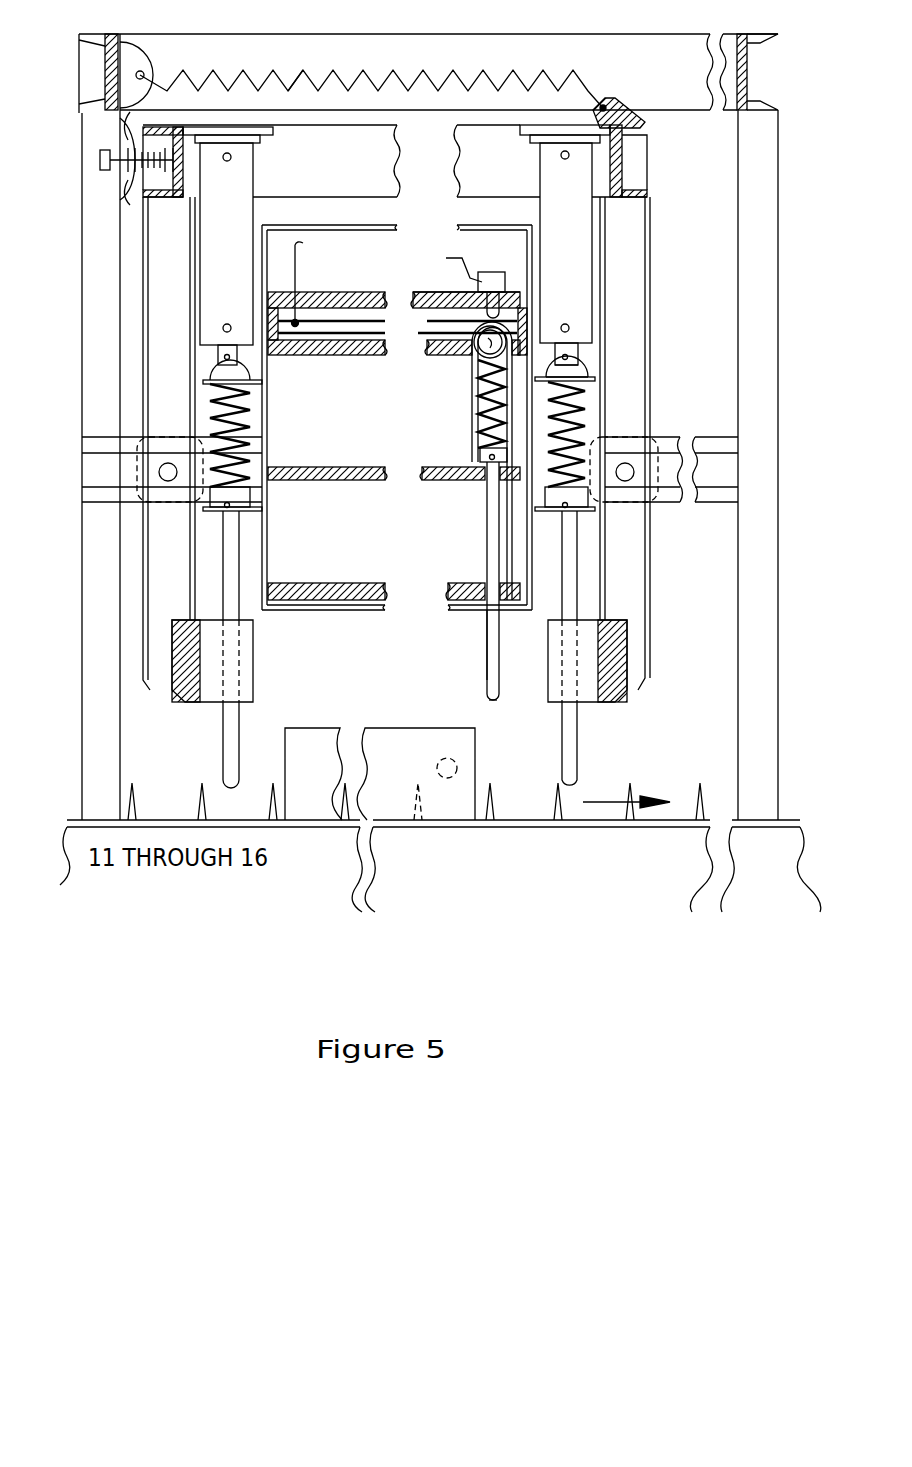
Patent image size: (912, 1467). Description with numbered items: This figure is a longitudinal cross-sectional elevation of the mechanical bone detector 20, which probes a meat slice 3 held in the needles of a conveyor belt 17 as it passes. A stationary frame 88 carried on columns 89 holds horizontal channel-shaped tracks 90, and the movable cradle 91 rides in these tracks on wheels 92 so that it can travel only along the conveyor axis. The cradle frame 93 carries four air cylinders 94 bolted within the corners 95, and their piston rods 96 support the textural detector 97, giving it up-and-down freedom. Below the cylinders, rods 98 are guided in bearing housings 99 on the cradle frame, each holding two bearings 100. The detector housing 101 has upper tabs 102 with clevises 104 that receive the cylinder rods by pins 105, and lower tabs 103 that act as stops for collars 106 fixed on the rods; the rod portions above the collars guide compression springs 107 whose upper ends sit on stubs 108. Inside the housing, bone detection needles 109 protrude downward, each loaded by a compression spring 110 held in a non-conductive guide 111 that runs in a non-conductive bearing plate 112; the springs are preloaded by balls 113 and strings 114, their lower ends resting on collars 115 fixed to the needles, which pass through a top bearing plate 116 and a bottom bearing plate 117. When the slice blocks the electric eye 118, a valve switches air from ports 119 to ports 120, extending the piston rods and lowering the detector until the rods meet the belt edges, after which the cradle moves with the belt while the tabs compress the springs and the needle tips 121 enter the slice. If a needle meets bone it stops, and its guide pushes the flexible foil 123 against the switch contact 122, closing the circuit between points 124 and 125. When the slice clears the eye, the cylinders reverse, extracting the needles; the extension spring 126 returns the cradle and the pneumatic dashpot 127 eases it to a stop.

The meat slice 3 is at (397, 727).
The conveyor belt 17 is at (790, 818).
The mechanical bone detector 20 is at (258, 32).
The stationary frame 88 is at (606, 33).
The columns 89 is at (82, 275).
The tracks 90 is at (763, 495).
The cradle 91 is at (633, 163).
The wheels 92 is at (137, 480).
The cradle frame 93 is at (355, 125).
The air cylinders 94 is at (202, 275).
The corners 95 is at (207, 123).
The piston rods 96 is at (582, 356).
The textural detector 97 is at (337, 610).
The rods 98 is at (223, 763).
The bearing housings 99 is at (253, 680).
The bearings 100 is at (548, 640).
The housing 101 is at (477, 610).
The upper tabs 102 is at (207, 379).
The lower tabs 103 is at (434, 443).
The clevises 104 is at (584, 377).
The pins 105 is at (582, 356).
The collars 106 is at (590, 477).
The compression springs 107 is at (590, 513).
The stubs 108 is at (590, 385).
The bone detection needles 109 is at (487, 677).
The compression spring 110 is at (476, 392).
The guide 111 is at (470, 437).
The bearing plate 112 is at (297, 357).
The balls 113 is at (440, 327).
The strings 114 is at (475, 357).
The collars 115 is at (480, 452).
The top bearing plate 116 is at (478, 483).
The bottom bearing plate 117 is at (307, 583).
The electric eye 118 is at (457, 770).
The ports 119 is at (223, 328).
The ports 120 is at (561, 155).
The bottom tips 121 is at (495, 703).
The switch contact 122 is at (480, 268).
The flexible foil 123 is at (448, 290).
The point 124 is at (356, 260).
The point 125 is at (462, 262).
The extension spring 126 is at (305, 87).
The pneumatic dashpot 127 is at (100, 162).